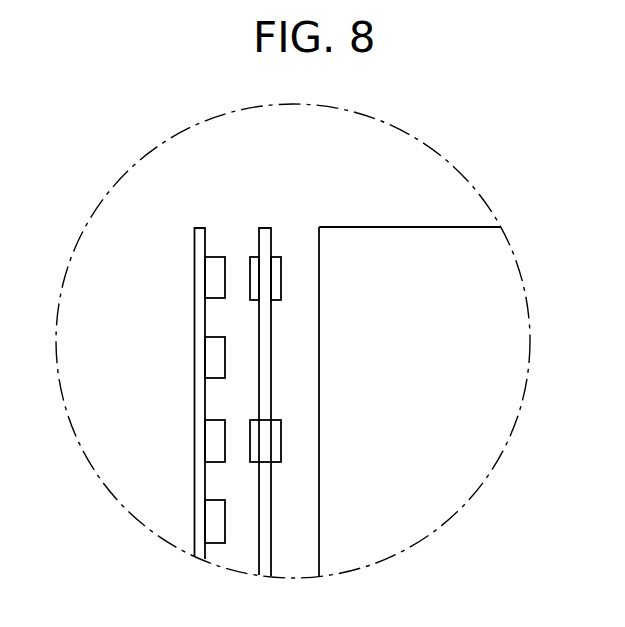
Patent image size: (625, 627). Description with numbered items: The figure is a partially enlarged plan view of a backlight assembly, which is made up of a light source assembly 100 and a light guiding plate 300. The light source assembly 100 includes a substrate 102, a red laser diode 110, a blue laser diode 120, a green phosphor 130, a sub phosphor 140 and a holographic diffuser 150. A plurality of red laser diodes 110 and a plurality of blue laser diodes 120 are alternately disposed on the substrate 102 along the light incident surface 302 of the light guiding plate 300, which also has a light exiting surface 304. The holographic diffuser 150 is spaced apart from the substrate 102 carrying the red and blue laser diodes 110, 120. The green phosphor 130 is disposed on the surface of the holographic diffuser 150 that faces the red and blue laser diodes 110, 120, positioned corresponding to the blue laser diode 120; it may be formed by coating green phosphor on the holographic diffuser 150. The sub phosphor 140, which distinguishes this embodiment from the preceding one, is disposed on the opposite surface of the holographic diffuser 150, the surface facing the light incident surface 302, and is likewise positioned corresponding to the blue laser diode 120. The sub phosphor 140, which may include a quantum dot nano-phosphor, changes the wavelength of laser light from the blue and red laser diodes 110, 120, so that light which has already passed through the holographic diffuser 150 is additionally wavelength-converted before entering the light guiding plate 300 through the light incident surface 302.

The light source assembly 100 is at (123, 403).
The substrate 102 is at (200, 243).
The red laser diode 110 is at (213, 353).
The blue laser diode 120 is at (212, 270).
The green phosphor 130 is at (250, 280).
The sub phosphor 140 is at (278, 288).
The holographic diffuser 150 is at (264, 393).
The light guiding plate 300 is at (395, 166).
The light incident surface 302 is at (319, 245).
The light exiting surface 304 is at (378, 227).